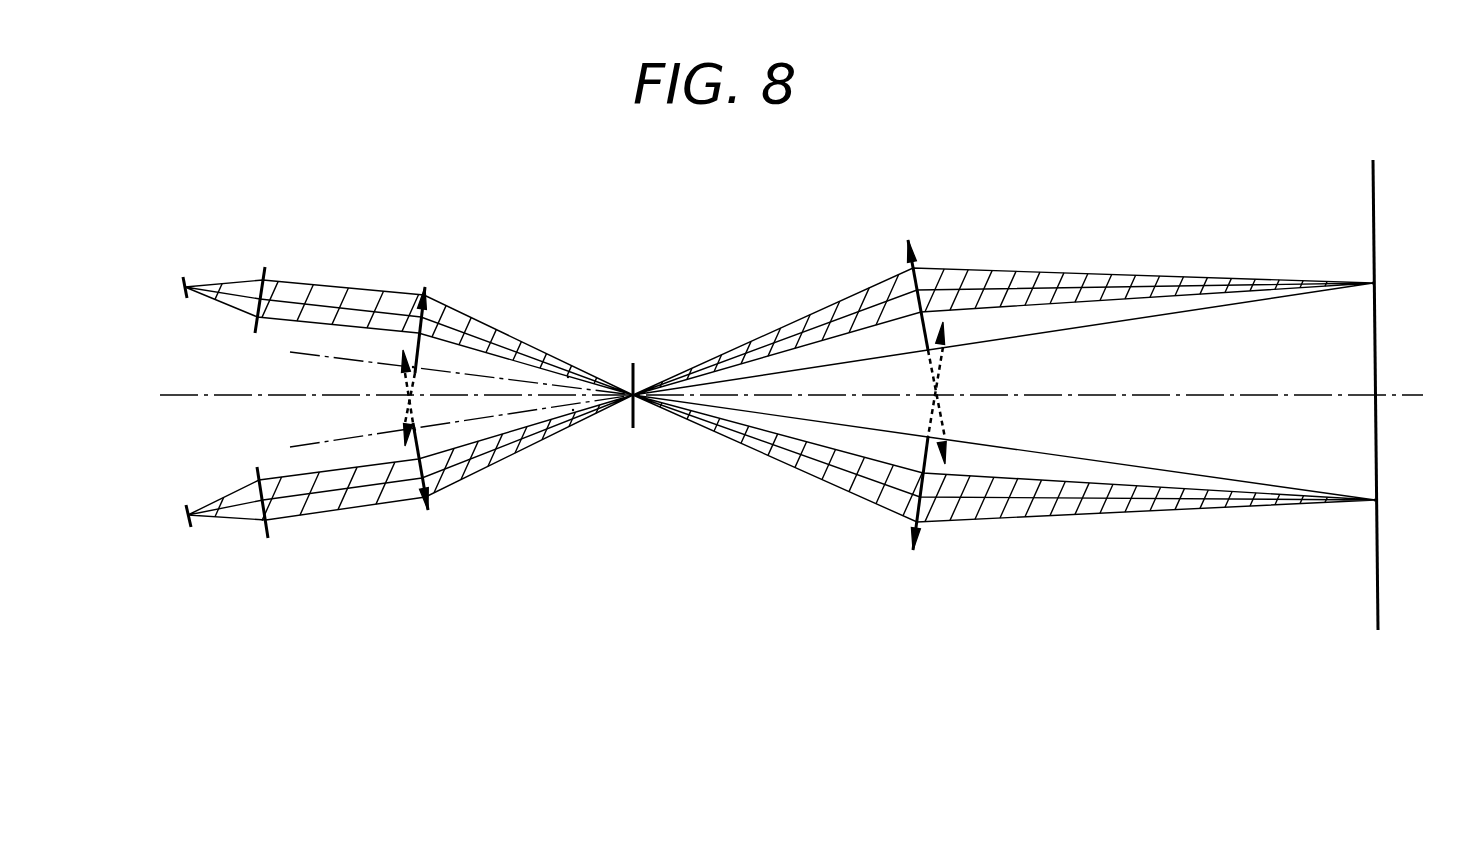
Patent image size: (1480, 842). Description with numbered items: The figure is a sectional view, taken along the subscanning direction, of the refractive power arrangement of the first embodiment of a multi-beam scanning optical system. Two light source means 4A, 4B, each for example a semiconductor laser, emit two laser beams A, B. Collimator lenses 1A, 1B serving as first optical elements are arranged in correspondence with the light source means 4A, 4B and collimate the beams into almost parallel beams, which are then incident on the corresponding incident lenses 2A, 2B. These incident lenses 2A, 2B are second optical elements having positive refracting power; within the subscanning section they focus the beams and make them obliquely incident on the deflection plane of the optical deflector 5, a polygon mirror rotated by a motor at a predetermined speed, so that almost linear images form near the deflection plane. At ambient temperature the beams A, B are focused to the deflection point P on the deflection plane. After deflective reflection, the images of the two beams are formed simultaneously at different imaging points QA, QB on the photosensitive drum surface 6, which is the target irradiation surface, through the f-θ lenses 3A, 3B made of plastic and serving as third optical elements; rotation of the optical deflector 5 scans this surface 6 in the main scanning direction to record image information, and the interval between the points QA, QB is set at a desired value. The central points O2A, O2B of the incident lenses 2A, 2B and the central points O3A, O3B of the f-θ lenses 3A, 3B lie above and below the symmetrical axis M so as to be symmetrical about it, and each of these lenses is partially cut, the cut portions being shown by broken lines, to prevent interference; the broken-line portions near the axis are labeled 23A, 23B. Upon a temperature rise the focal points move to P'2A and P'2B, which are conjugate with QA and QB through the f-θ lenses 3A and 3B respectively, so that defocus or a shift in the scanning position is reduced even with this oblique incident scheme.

The light source means 4A is at (187, 283).
The collimator lens 1A is at (263, 284).
The laser beam A is at (223, 305).
The virtual lens A 23A is at (403, 348).
The incident lens 2A is at (425, 285).
The central point (optical axis) of incident lens O2A is at (422, 346).
The focal point P'2A is at (547, 330).
The optical deflector 5 is at (628, 368).
The deflection point P is at (655, 359).
The focal point P'2B is at (596, 452).
The central point (optical axis) of incident lens O2B is at (417, 437).
The virtual lens B 23B is at (405, 447).
The incident lens 2B is at (428, 510).
The light source means 4B is at (186, 528).
The laser beam B is at (240, 521).
The collimator lens 1B is at (268, 537).
The central point (optical axis) of f-θ lens O3B is at (928, 350).
The f-θ lens 3B is at (912, 243).
The central point (optical axis) of f-θ lens O3A is at (928, 437).
The f-θ lens 3A is at (913, 550).
The photosensitive drum surface 6 is at (1375, 180).
The imaging point QB is at (1373, 283).
The imaging point QA is at (1375, 501).
The symmetrical axis M is at (1406, 397).